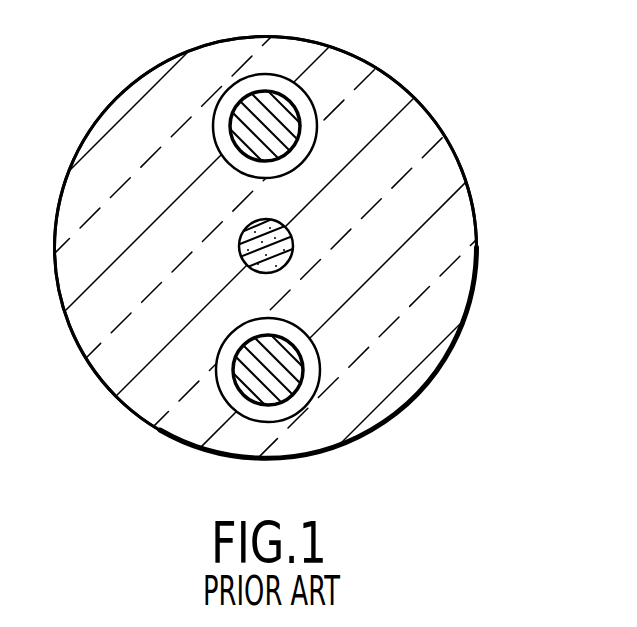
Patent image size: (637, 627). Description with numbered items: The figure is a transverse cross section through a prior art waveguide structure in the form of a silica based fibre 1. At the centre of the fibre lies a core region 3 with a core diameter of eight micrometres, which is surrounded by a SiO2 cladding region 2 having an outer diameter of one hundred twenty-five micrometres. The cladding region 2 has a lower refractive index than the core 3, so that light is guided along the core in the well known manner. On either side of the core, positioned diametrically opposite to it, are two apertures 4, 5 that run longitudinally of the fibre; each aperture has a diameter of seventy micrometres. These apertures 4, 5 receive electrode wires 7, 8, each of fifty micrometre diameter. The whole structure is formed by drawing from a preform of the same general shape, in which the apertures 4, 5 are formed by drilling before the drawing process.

The silica based fibre 1 is at (479, 202).
The cladding region 2 is at (420, 131).
The core region 3 is at (240, 238).
The aperture 4 is at (323, 127).
The electrode wire 7 is at (224, 93).
The aperture 5 is at (297, 406).
The electrode wire 8 is at (240, 390).